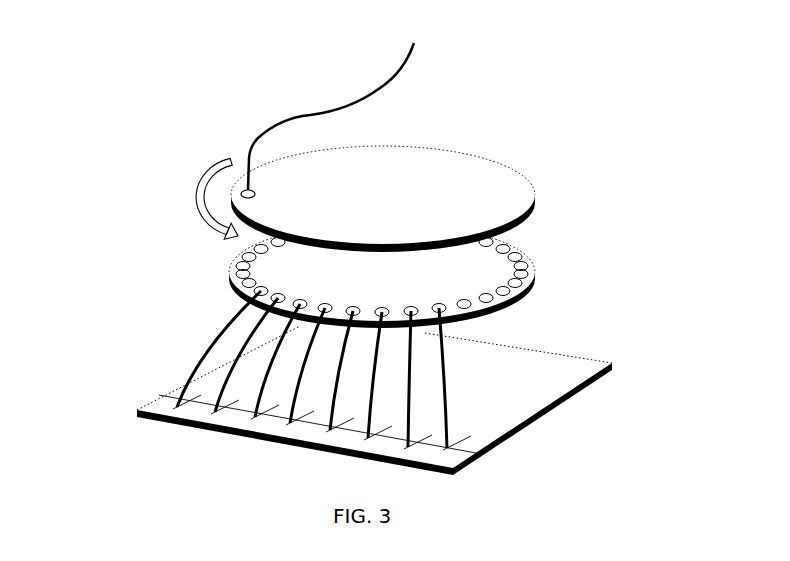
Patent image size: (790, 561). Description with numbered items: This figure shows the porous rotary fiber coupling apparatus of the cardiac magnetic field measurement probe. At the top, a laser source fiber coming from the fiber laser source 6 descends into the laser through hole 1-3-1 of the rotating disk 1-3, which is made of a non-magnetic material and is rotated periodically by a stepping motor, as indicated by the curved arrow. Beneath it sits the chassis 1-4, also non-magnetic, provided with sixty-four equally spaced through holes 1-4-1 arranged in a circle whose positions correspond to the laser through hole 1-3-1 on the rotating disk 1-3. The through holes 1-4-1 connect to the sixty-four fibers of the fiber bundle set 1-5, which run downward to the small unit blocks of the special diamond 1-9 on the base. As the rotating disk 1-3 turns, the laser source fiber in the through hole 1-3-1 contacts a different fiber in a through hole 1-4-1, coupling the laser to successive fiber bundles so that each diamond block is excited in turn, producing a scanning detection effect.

The fiber laser source 6 is at (328, 107).
The rotating disk 1-3 is at (446, 176).
The laser through hole 1-3-1 is at (154, 174).
The chassis 1-4 is at (445, 255).
The through holes 1-4-1 is at (457, 286).
The fiber bundle set 1-5 is at (445, 393).
The special diamond 1-9 is at (396, 410).